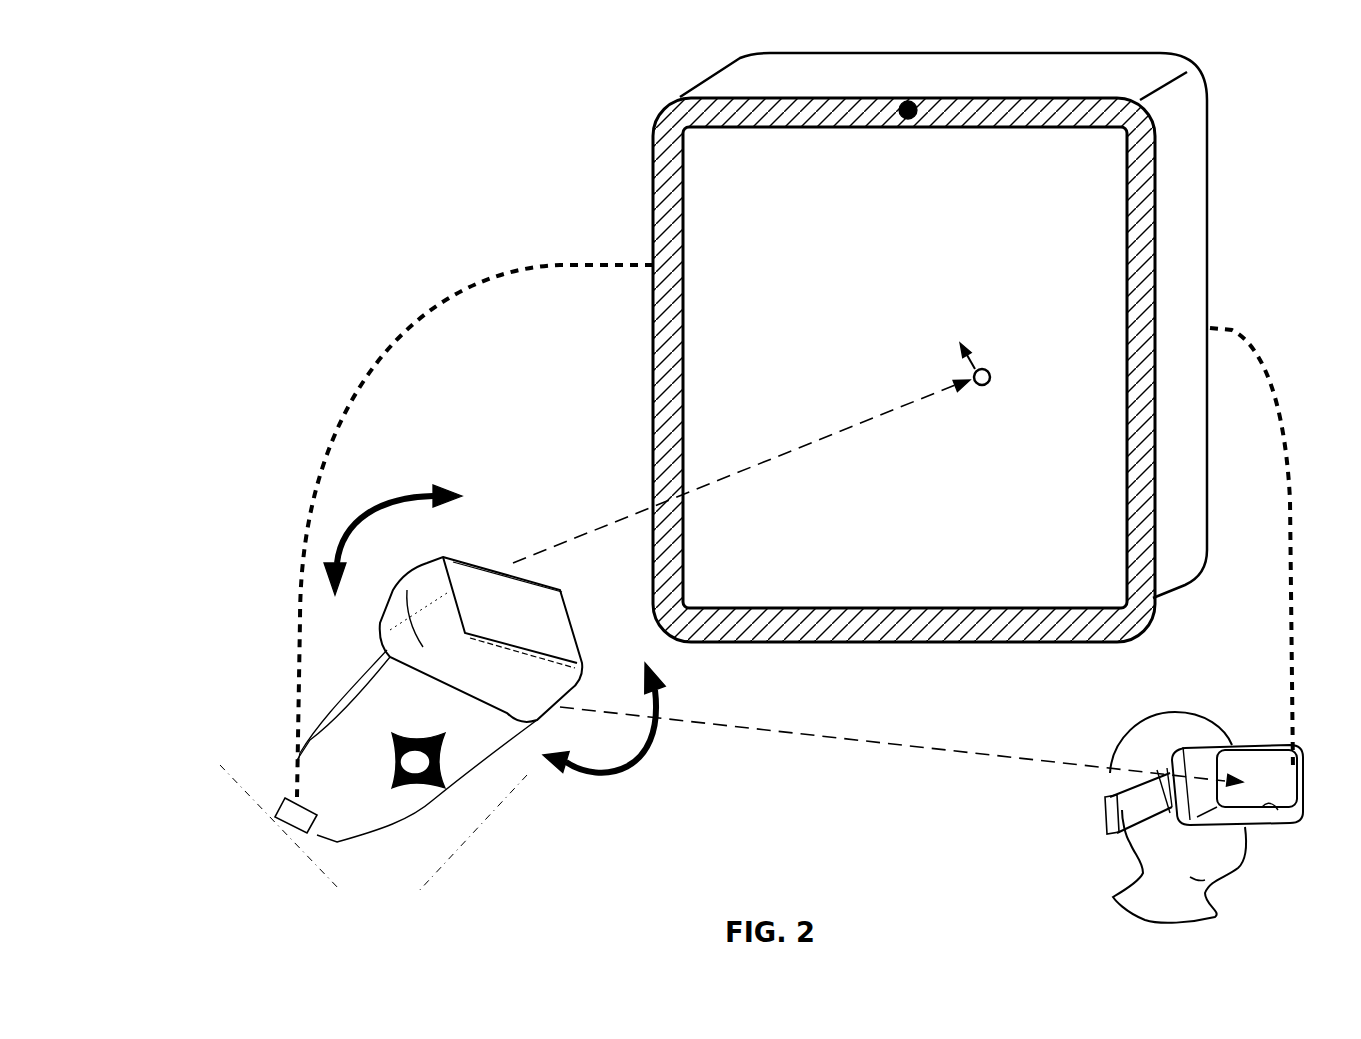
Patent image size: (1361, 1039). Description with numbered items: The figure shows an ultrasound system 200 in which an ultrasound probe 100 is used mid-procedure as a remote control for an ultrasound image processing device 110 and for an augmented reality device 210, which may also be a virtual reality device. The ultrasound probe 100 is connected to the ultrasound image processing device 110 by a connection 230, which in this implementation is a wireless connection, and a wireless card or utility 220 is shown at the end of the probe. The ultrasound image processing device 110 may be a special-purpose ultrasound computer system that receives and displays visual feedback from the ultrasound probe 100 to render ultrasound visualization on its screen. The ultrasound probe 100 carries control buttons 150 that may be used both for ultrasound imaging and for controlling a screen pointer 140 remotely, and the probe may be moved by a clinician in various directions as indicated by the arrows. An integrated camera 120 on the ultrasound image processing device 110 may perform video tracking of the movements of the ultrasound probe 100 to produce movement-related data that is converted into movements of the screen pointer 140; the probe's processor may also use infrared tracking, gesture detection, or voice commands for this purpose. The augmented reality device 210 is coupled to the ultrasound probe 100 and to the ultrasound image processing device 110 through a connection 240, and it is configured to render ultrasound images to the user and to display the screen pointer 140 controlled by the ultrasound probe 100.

The ultrasound probe 100 is at (497, 582).
The ultrasound image processing device 110 is at (655, 130).
The integrated camera 120 is at (897, 97).
The screen pointer 140 is at (990, 366).
The control buttons 150 is at (437, 768).
The ultrasound system 200 is at (280, 120).
The augmented reality device 210 is at (1195, 738).
The wireless card 220 is at (302, 833).
The connection 230 is at (403, 317).
The connection 240 is at (1280, 427).